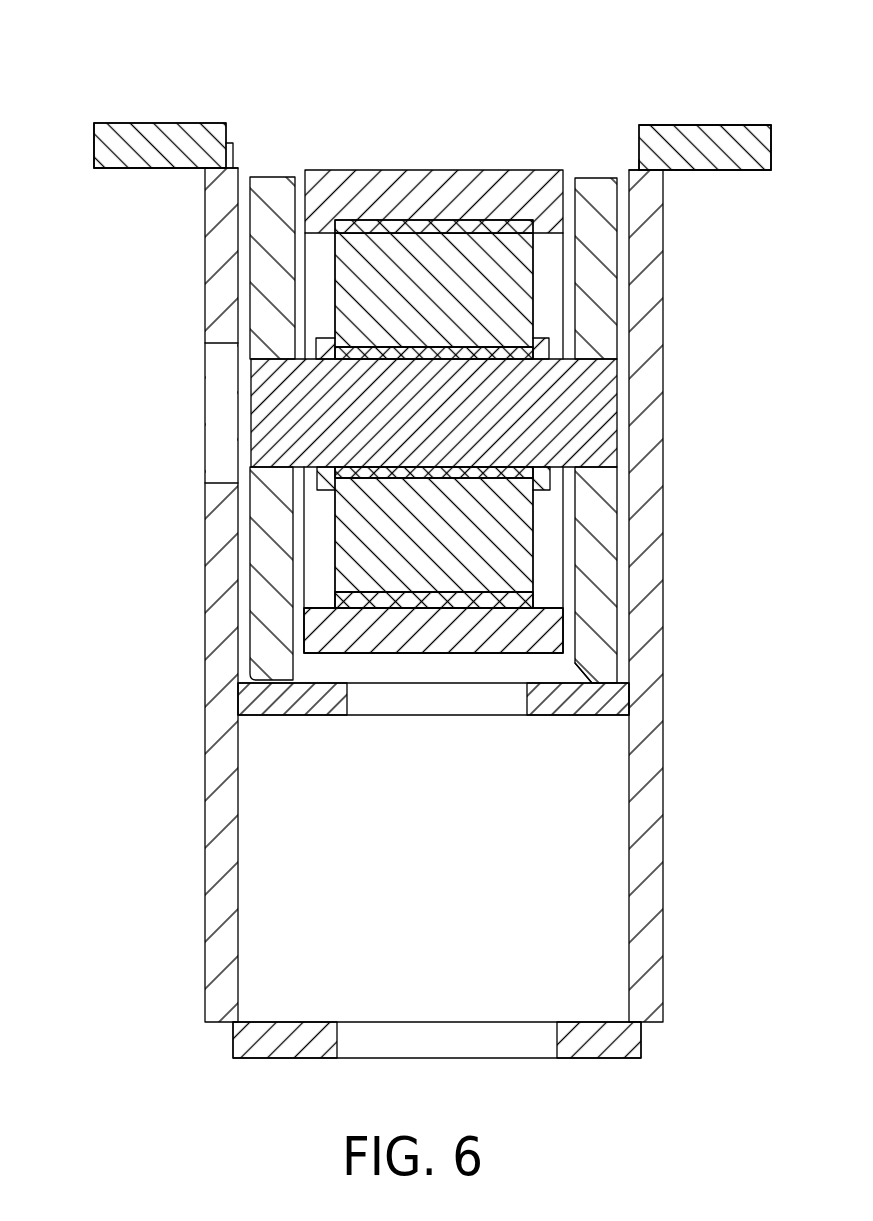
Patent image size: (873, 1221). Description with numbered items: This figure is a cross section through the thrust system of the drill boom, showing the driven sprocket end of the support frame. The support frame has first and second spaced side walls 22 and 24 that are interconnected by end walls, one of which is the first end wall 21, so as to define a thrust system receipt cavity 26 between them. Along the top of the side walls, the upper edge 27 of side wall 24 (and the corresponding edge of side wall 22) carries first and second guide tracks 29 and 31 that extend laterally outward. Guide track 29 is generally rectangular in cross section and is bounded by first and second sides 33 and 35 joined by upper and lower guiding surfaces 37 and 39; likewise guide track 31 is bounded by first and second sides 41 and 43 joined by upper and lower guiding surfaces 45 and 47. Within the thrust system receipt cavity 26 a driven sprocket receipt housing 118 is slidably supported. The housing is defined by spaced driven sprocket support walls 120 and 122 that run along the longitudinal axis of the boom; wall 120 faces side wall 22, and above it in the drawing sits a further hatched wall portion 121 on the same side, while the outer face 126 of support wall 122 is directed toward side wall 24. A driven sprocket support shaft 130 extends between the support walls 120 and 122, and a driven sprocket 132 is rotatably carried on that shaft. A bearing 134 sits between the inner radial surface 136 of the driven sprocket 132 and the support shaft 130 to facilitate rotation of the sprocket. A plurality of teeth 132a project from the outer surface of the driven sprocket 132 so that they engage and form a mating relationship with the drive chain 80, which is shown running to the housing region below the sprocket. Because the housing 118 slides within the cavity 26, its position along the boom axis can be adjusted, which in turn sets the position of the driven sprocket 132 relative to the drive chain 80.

The first end wall 21 is at (95, 123).
The first side wall 22 is at (212, 575).
The second side wall 24 is at (650, 582).
The thrust system receipt cavity 26 is at (322, 670).
The upper edge of side wall 24 27 is at (233, 168).
The first guide track 29 is at (633, 170).
The second guide track 31 is at (771, 125).
The first side of guide track 29 33 is at (95, 152).
The second side of guide track 29 35 is at (234, 140).
The upper guiding surface of guide track 29 37 is at (173, 123).
The lower guiding surface of guide track 29 39 is at (137, 170).
The first side of guide track 31 41 is at (771, 155).
The second side of guide track 31 43 is at (639, 128).
The upper guiding surface of guide track 31 45 is at (690, 125).
The lower guiding surface of guide track 31 47 is at (727, 170).
The drive chain 80 is at (437, 645).
The driven sprocket receipt housing 118 is at (603, 670).
The driven sprocket support wall 120 is at (258, 530).
The upper left pole piece 121 is at (255, 290).
The driven sprocket support wall 122 is at (600, 520).
The outer face of driven sprocket support wall 122 126 is at (612, 332).
The driven sprocket support shaft 130 is at (600, 405).
The driven sprocket 132 is at (383, 240).
The teeth 132a is at (478, 610).
The bearing 134 is at (367, 477).
The inner radial surface 136 is at (448, 468).